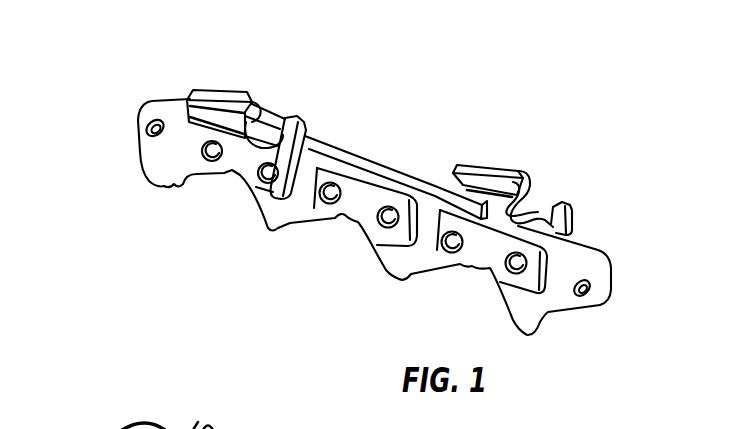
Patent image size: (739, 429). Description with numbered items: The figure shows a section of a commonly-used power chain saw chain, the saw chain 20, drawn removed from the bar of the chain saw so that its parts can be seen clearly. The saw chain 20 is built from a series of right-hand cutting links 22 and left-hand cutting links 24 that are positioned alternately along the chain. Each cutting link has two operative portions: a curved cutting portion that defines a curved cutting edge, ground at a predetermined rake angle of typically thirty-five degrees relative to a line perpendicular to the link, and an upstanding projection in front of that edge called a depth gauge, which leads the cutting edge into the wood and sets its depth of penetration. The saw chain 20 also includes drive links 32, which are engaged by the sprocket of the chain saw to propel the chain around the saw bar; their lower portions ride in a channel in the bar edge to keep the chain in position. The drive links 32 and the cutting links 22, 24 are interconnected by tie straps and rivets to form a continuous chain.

The saw chain 20 is at (133, 176).
The right-hand cutting link 22 is at (514, 160).
The left-hand cutting link 24 is at (205, 76).
The drive link 32 is at (160, 184).